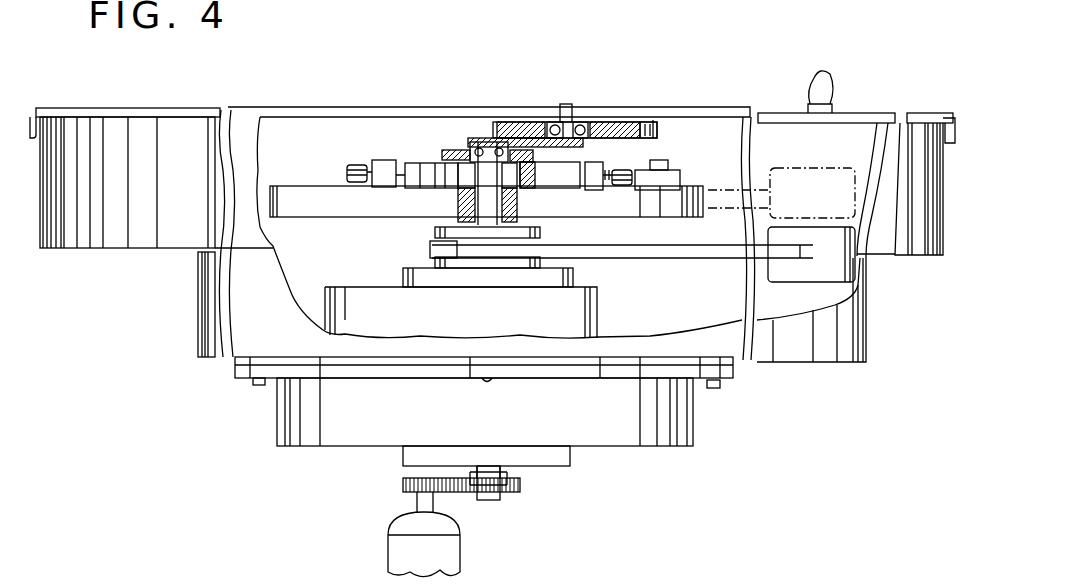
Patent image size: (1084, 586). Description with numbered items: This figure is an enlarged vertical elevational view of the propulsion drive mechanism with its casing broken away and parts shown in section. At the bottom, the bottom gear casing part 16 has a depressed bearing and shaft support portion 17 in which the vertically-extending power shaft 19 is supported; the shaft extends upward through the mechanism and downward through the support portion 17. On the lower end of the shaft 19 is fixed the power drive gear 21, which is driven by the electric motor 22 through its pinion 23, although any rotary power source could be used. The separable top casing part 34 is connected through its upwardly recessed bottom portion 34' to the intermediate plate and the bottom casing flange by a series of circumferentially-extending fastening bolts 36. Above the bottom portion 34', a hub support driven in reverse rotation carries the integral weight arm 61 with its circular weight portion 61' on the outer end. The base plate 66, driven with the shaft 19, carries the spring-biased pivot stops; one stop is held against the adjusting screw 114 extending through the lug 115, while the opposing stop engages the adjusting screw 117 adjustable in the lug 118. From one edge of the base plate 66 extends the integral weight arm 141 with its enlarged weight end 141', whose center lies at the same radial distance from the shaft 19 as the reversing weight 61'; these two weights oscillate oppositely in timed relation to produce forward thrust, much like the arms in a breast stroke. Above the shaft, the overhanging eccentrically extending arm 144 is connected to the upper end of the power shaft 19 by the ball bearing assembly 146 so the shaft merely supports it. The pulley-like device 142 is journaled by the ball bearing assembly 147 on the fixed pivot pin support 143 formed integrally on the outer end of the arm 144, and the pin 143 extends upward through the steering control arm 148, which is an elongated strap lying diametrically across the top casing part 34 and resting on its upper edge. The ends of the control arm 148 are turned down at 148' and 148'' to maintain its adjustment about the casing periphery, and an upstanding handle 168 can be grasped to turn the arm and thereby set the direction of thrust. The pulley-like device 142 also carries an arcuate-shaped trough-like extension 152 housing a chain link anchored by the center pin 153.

The bottom gear casing part 16 is at (370, 425).
The depressed bearing and shaft support portion 17 is at (420, 455).
The power shaft 19 is at (482, 197).
The power drive gear 21 is at (508, 493).
The electric motor 22 is at (450, 561).
The pinion 23 is at (410, 490).
The top casing part 34 is at (180, 304).
The upwardly recessed bottom portion 34' is at (444, 282).
The fastening bolts 36 is at (256, 388).
The weight arm 61 is at (621, 270).
The circular weight portion 61' is at (810, 270).
The base plate 66 is at (346, 198).
The adjusting screw 114 is at (621, 175).
The lug 115 is at (590, 192).
The adjusting screw 117 is at (355, 164).
The lug 118 is at (381, 162).
The weight arm 141 is at (735, 178).
The enlarged weight end 141' is at (812, 176).
The pulley-like device 142 is at (613, 123).
The pivot pin support 143 is at (566, 104).
The eccentrically extending arm 144 is at (562, 140).
The ball bearing assembly 146 is at (455, 148).
The ball bearing assembly 147 is at (549, 120).
The steering control arm 148 is at (485, 216).
The turned-down end 148' is at (125, 160).
The turned-down end 148'' is at (931, 156).
The arcuate-shaped trough-like extension 152 is at (657, 134).
The center pin 153 is at (652, 128).
The handle 168 is at (818, 72).